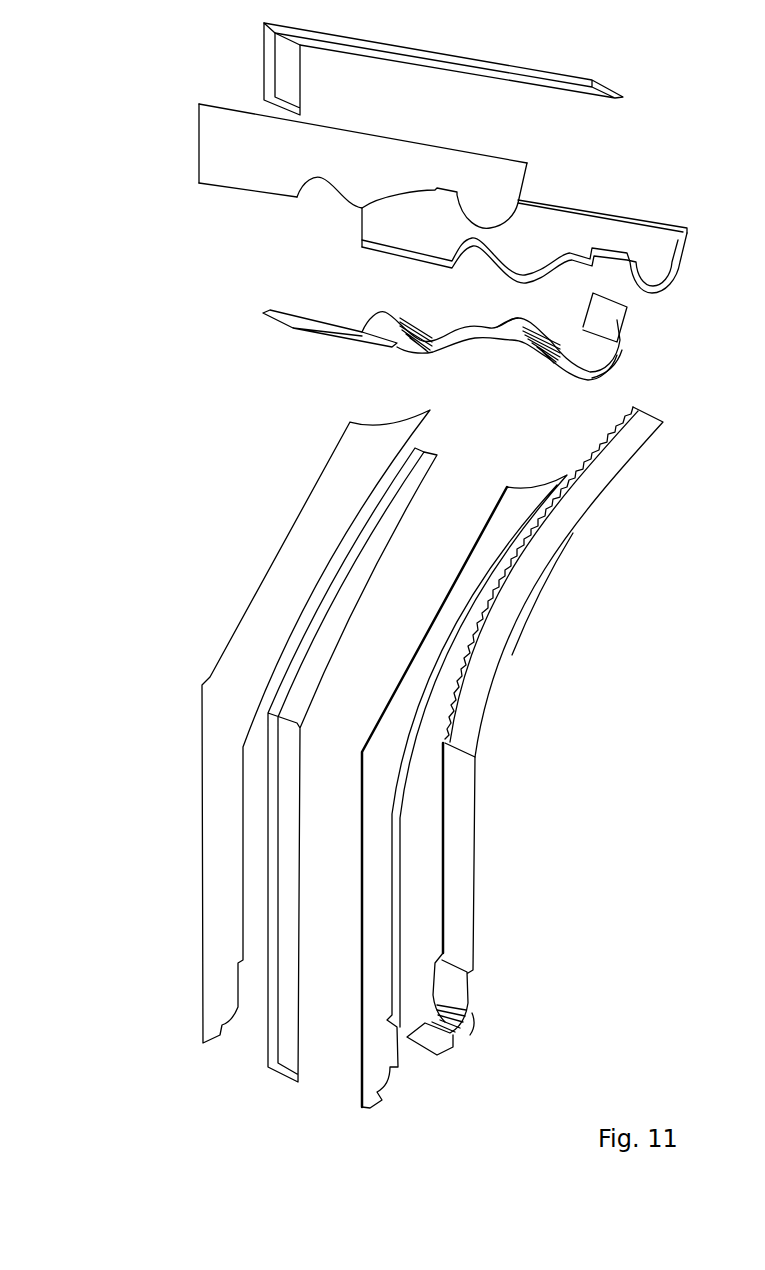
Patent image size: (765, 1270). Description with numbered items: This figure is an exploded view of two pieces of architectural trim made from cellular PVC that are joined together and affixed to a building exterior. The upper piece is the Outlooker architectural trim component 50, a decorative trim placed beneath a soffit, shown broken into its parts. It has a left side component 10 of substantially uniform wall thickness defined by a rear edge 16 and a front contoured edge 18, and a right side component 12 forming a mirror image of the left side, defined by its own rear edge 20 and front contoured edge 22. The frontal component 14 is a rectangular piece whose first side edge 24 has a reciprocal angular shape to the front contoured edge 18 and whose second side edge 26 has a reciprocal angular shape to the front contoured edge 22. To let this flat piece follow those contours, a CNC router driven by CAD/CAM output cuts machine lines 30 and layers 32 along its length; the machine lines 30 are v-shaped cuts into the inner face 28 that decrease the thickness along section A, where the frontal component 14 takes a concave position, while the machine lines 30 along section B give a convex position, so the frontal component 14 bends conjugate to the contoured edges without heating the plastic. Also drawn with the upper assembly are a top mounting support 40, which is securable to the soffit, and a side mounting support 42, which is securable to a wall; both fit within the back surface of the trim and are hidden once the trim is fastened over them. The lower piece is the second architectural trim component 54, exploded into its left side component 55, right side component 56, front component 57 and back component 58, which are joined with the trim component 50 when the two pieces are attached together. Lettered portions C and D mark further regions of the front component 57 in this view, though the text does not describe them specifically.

The architectural trim component 50 is at (97, 148).
The top mounting support 40 is at (437, 55).
The side mounting support 42 is at (270, 62).
The left side component 10 is at (528, 165).
The rear edge 16 is at (347, 130).
The front contoured edge 18 is at (273, 194).
The front contoured edge 22 is at (362, 245).
The rear edge 20 is at (601, 213).
The right side component 12 is at (673, 233).
The inner face 28 is at (318, 320).
The machine lines 30 is at (422, 345).
The second side edge 26 is at (507, 320).
The layers 32 is at (523, 322).
The first side edge 24 is at (547, 332).
The frontal component 14 is at (617, 320).
The section A is at (478, 355).
The section B is at (620, 358).
The architectural trim component 54 is at (97, 665).
The left side component 55 is at (212, 830).
The back component 58 is at (287, 738).
The right side component 56 is at (377, 868).
The front component 57 is at (468, 847).
The curved edge line C is at (543, 592).
The knurled foot D is at (478, 1027).